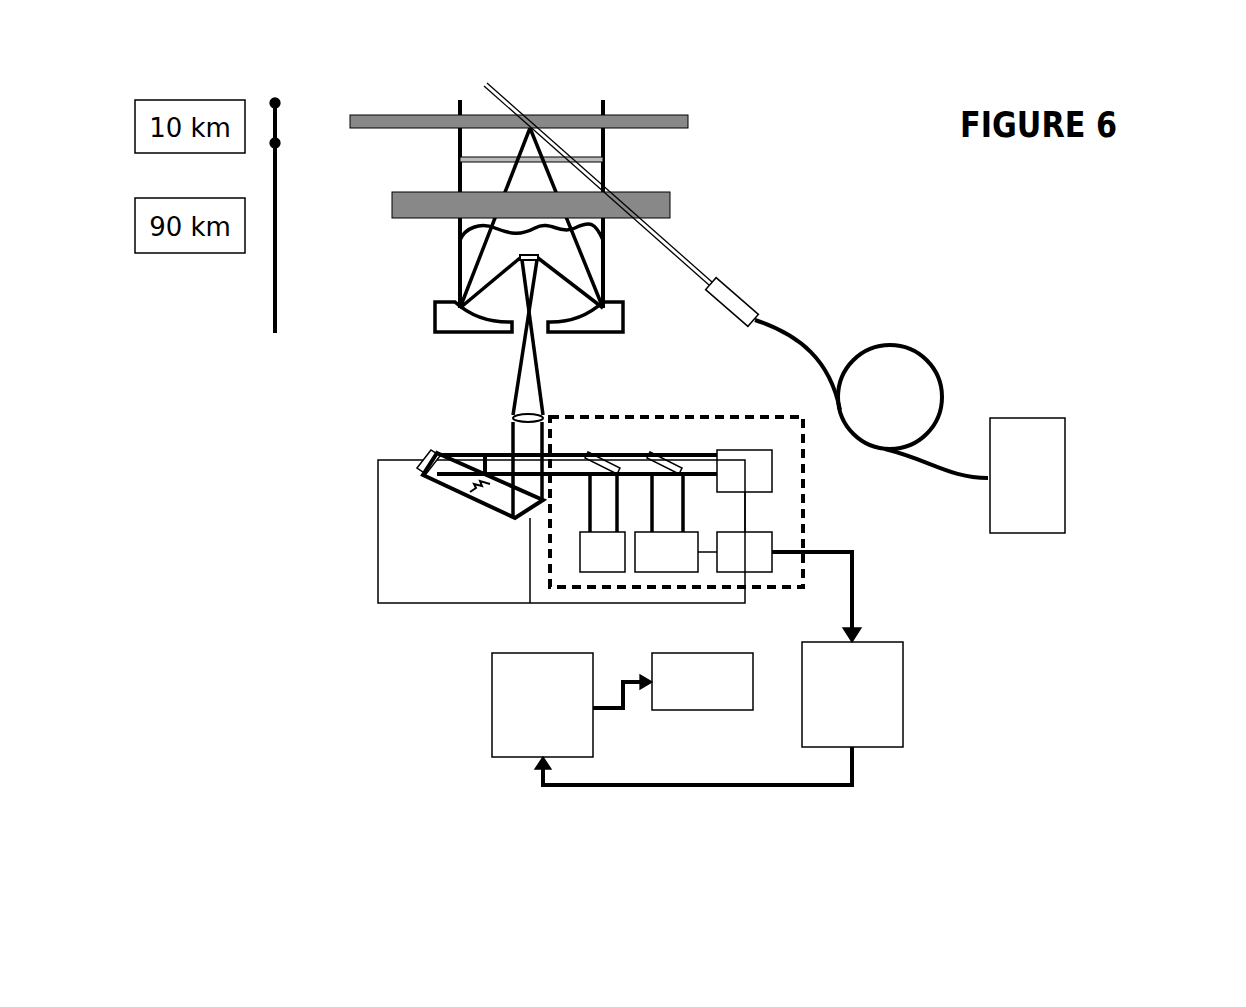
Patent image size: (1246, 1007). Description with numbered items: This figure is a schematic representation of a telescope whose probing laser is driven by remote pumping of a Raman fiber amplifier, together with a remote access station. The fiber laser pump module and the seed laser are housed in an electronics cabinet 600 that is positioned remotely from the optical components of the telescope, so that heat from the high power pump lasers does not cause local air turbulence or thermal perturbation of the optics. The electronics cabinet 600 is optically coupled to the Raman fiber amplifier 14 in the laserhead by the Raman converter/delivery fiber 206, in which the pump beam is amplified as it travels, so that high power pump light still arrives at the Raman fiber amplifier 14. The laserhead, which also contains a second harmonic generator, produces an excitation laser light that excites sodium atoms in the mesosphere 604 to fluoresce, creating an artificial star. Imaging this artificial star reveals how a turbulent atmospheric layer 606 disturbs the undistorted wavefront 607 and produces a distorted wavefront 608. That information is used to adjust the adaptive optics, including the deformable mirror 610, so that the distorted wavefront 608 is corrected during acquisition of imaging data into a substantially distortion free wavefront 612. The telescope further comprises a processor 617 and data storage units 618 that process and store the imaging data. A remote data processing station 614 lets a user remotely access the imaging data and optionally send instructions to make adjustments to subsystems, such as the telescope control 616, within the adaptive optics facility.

The mesosphere 604 is at (350, 115).
The turbulent atmospheric layer 606 is at (685, 213).
The undistorted wavefront 607 is at (603, 153).
The distorted wavefront 608 is at (460, 237).
The Raman fiber amplifier 14 is at (737, 300).
The Raman converter/delivery fiber 206 is at (942, 380).
The electronics cabinet 600 is at (1048, 480).
The deformable mirror 610 is at (423, 460).
The distortion free wavefront 612 is at (477, 453).
The processor 617 is at (802, 500).
The remote data processing station 614 is at (520, 708).
The telescope control 616 is at (717, 693).
The data storage units 618 is at (883, 693).